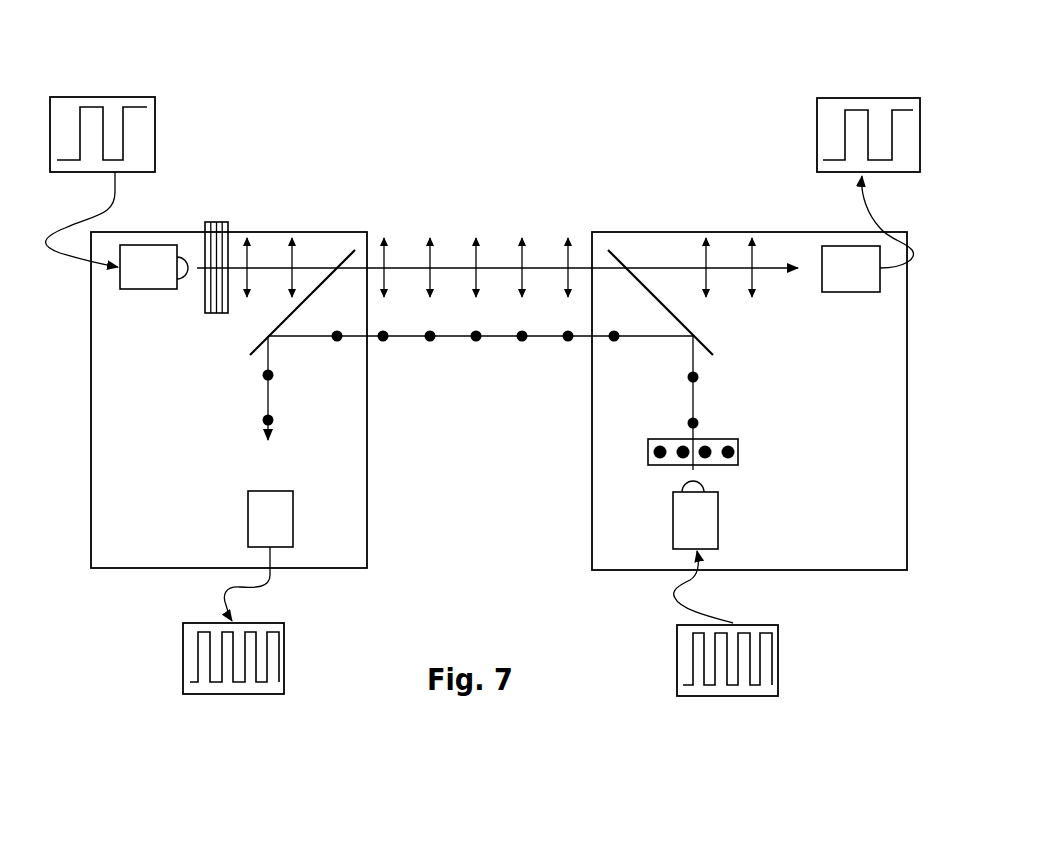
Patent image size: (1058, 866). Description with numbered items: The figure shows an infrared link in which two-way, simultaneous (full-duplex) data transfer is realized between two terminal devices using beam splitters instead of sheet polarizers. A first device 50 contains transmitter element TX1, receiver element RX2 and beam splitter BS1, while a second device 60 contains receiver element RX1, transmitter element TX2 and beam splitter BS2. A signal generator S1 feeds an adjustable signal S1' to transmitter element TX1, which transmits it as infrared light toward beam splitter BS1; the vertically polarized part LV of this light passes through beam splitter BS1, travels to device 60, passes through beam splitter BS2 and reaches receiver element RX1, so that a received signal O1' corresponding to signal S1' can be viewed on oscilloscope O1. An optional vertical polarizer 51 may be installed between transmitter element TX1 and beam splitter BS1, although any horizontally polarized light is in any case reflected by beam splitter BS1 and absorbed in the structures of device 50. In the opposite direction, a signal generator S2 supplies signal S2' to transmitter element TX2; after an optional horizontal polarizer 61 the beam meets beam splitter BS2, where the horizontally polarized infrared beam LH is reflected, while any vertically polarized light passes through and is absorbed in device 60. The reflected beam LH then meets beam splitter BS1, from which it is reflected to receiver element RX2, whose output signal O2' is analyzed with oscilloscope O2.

The device 50 is at (313, 232).
The device 60 is at (648, 233).
The vertical polarizer 51 is at (218, 313).
The horizontal polarizer 61 is at (738, 452).
The beam splitter BS1 is at (285, 320).
The beam splitter BS2 is at (680, 315).
The transmitter element TX1 is at (154, 267).
The transmitter element TX2 is at (695, 515).
The receiver element RX1 is at (851, 269).
The receiver element RX2 is at (270, 519).
The vertically polarized infrared light LV is at (457, 268).
The horizontally polarized infrared light beam LH is at (460, 338).
The signal generator S1 is at (139, 182).
The signal S1' is at (104, 92).
The signal generator S2 is at (768, 623).
The signal S2' is at (752, 686).
The oscilloscope O1 is at (828, 183).
The signal O1' is at (841, 101).
The oscilloscope O2 is at (187, 620).
The signal O2' is at (222, 683).